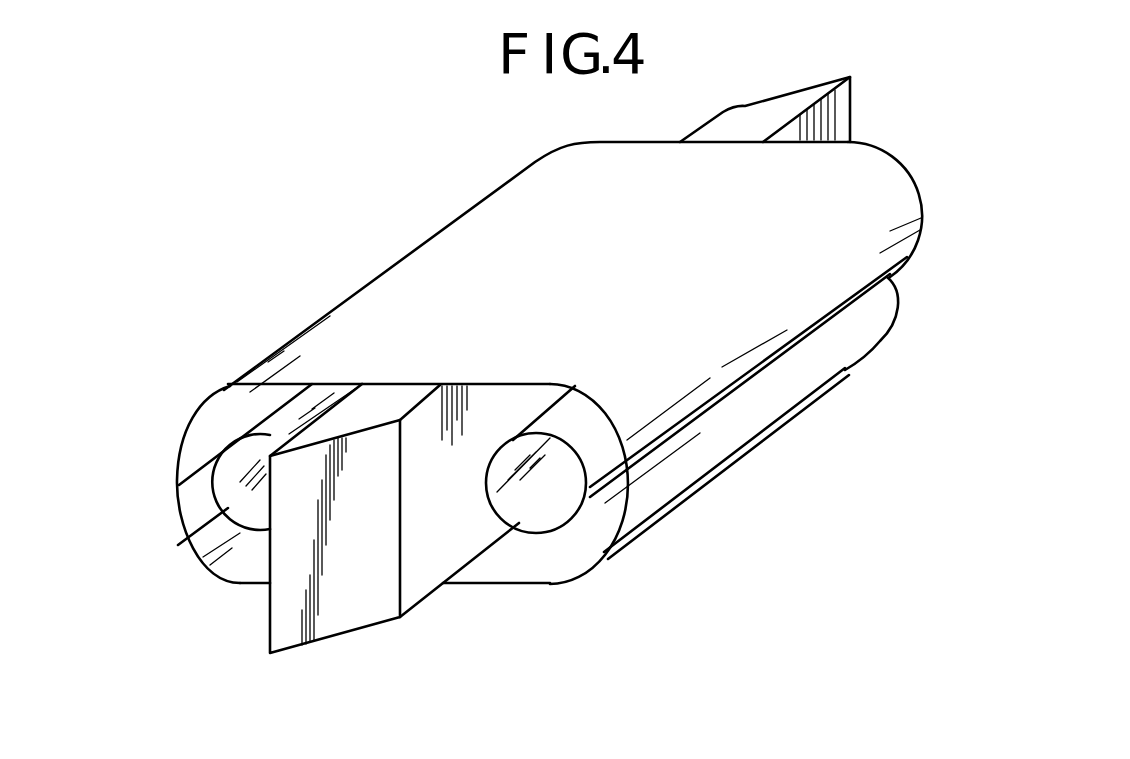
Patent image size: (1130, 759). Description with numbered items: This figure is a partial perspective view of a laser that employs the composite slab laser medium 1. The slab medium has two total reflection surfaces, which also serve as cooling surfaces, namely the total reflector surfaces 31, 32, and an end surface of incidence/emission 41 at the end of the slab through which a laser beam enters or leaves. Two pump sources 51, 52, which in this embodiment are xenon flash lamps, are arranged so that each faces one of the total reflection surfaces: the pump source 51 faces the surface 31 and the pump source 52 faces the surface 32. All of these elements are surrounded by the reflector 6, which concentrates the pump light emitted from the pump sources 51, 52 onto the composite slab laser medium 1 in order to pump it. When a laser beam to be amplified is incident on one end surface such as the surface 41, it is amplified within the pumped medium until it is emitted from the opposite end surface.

The composite slab laser medium 1 is at (357, 554).
The reflector 6 is at (893, 193).
The total reflector surface 31 is at (425, 570).
The total reflector surface 32 is at (223, 580).
The end surface of incidence/emission 41 is at (342, 603).
The pump source 51 is at (605, 492).
The pump source 52 is at (178, 545).